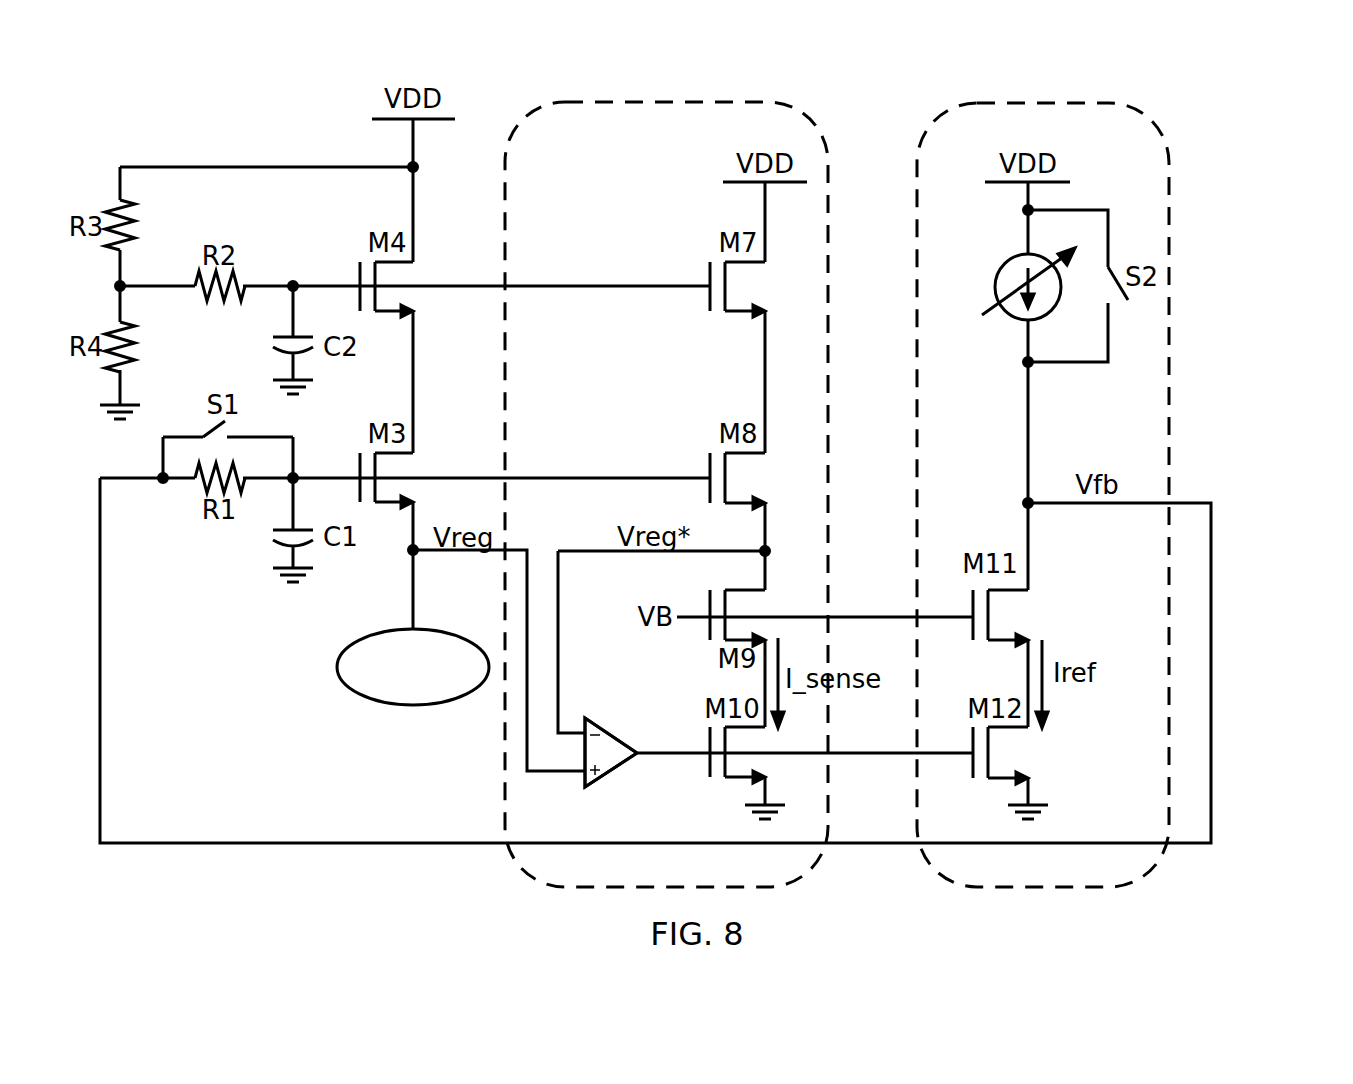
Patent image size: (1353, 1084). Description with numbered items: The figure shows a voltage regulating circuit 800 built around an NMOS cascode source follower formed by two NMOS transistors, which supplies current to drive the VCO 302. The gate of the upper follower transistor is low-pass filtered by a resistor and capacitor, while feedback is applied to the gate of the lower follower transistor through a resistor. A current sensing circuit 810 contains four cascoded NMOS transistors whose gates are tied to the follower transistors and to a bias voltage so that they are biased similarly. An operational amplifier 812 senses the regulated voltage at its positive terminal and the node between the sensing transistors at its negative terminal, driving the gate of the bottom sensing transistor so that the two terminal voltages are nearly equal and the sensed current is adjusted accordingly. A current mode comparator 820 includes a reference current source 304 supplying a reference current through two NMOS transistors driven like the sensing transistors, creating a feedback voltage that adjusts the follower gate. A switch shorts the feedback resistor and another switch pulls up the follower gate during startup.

The voltage regulating circuit 800 is at (1253, 143).
The current sensing circuit 810 is at (658, 102).
The operational amplifier 812 is at (608, 727).
The current mode comparator 820 is at (1023, 103).
The VCO 302 is at (390, 705).
The reference current source 304 is at (998, 273).